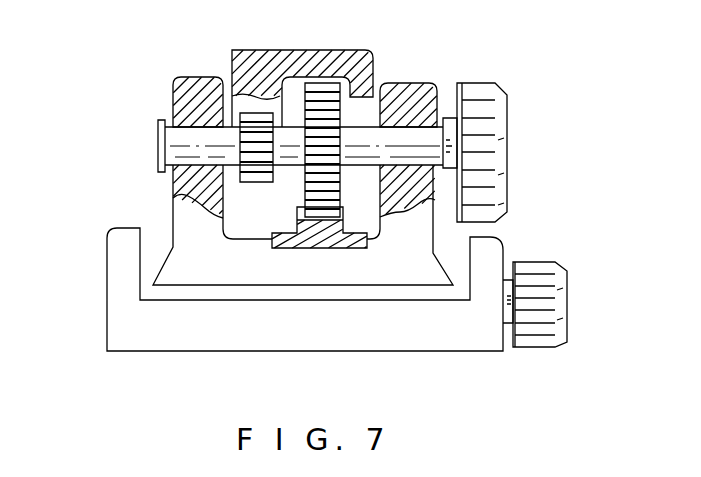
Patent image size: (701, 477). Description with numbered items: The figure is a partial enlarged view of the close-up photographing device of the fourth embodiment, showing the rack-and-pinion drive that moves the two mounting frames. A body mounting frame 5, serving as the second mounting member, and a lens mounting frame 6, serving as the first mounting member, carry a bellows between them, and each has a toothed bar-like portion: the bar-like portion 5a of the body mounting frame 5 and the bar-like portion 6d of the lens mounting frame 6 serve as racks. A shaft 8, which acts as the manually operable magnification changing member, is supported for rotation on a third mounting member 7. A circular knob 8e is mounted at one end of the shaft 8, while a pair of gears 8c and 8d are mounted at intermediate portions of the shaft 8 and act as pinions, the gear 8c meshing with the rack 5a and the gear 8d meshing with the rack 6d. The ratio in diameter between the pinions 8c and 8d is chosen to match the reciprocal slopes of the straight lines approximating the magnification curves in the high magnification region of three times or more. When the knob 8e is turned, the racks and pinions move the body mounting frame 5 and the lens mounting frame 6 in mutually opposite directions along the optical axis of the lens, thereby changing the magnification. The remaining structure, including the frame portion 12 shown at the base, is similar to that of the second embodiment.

The body mounting frame 5 is at (285, 240).
The bar-like portion 5a is at (303, 219).
The lens mounting frame 6 is at (322, 53).
The bar-like portion 6d is at (227, 80).
The third mounting member 7 is at (415, 83).
The shaft 8 is at (157, 150).
The gear 8c is at (318, 103).
The gear 8d is at (253, 157).
The circular knob 8e is at (478, 88).
The frame 12 is at (449, 344).